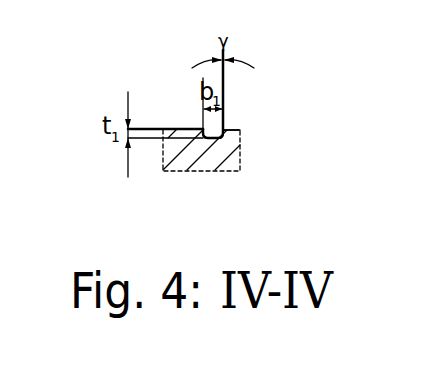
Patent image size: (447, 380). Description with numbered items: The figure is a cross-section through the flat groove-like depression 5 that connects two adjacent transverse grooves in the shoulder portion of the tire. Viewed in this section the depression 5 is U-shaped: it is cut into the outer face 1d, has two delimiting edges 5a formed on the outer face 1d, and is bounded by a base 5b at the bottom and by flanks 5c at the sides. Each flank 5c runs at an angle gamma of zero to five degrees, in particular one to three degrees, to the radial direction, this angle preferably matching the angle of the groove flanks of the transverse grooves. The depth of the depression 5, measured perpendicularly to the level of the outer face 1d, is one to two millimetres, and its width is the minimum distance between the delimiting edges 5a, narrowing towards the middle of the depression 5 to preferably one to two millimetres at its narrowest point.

The outer face 1d is at (180, 128).
The groove-like depression 5 is at (210, 134).
The delimiting edges 5a is at (202, 127).
The base 5b is at (208, 139).
The flanks 5c is at (227, 131).